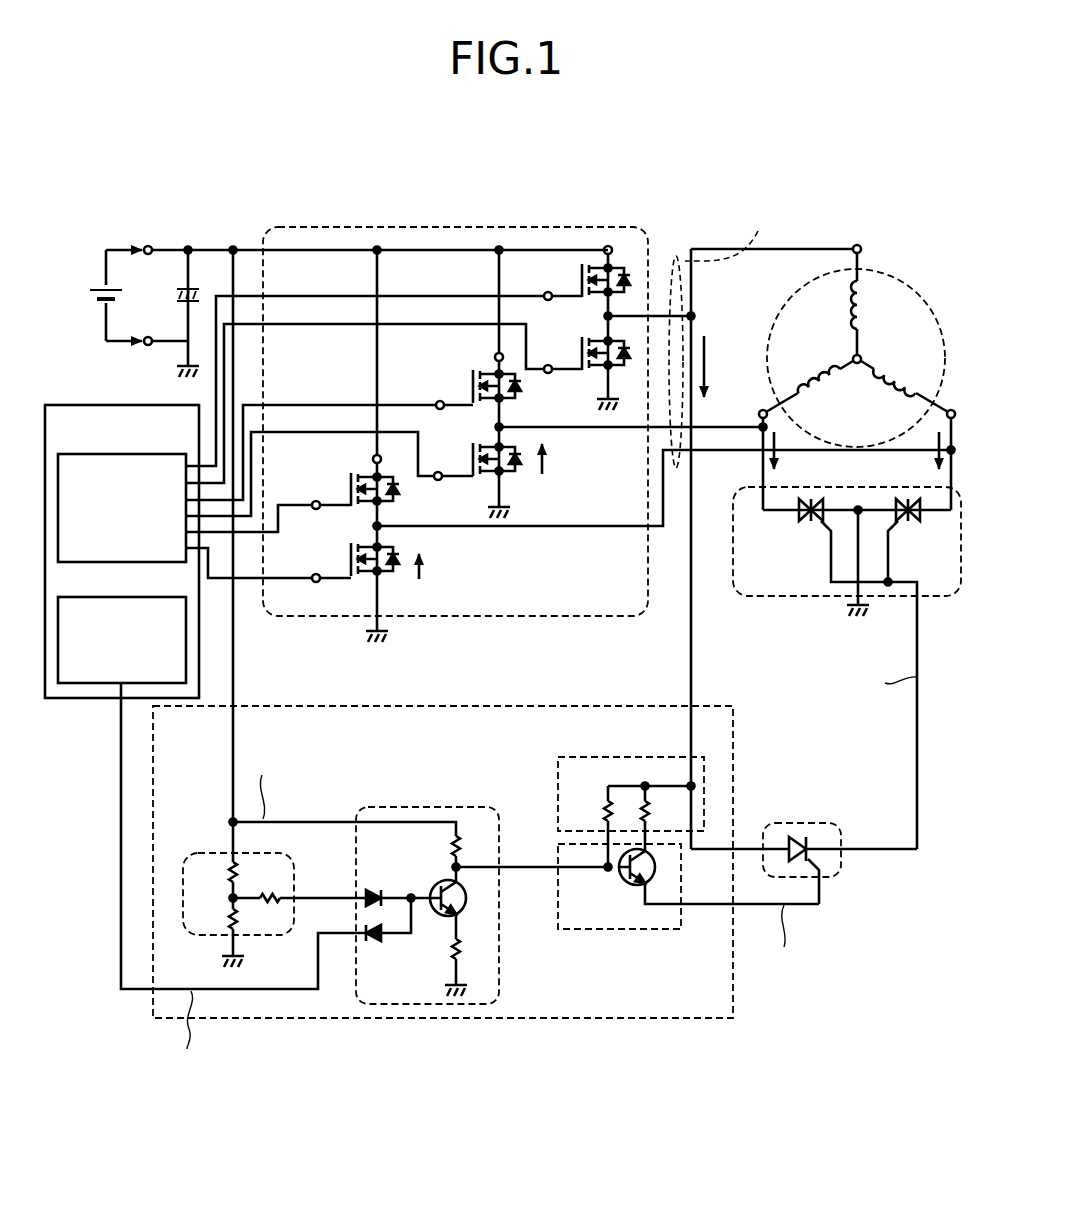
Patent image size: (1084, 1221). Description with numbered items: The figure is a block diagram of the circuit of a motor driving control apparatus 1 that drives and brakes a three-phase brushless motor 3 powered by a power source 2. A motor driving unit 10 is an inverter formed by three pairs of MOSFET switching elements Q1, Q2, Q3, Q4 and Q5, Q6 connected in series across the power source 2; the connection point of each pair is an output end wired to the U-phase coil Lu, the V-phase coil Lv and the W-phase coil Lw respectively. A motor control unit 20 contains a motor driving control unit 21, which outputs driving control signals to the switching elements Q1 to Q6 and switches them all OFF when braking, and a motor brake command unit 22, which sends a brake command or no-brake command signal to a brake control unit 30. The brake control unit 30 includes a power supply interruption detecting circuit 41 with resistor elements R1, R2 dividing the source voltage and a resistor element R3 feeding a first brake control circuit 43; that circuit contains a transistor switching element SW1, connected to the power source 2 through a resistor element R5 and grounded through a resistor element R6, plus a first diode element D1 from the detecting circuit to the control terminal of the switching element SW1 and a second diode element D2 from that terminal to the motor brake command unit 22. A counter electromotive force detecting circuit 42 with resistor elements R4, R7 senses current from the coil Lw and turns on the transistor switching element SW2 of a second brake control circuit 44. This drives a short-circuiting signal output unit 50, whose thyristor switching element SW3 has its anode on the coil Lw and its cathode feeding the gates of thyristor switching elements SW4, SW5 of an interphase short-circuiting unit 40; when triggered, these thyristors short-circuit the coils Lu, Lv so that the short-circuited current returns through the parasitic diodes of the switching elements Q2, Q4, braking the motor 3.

The motor driving control apparatus 1 is at (669, 200).
The power source 2 is at (91, 279).
The motor 3 is at (908, 283).
The motor driving unit 10 is at (582, 228).
The motor control unit 20 is at (100, 406).
The motor driving control unit 21 is at (100, 455).
The motor brake command unit 22 is at (105, 598).
The brake control unit 30 is at (258, 706).
The interphase short-circuiting unit 40 is at (781, 598).
The power supply interruption detecting circuit 41 is at (206, 853).
The counter electromotive force detecting circuit 42 is at (632, 758).
The first brake control circuit 43 is at (460, 808).
The second brake control circuit 44 is at (645, 930).
The short-circuiting signal output unit 50 is at (820, 824).
The switching element Q1 is at (409, 490).
The switching element Q2 is at (399, 579).
The switching element Q3 is at (531, 389).
The switching element Q4 is at (523, 479).
The switching element Q5 is at (623, 261).
The switching element Q6 is at (623, 378).
The resistor element R1 is at (219, 865).
The resistor element R2 is at (222, 937).
The resistor element R3 is at (299, 884).
The resistor element R4 is at (660, 817).
The resistor element R5 is at (472, 858).
The resistor element R6 is at (469, 956).
The resistor element R7 is at (590, 826).
The first diode element D1 is at (397, 884).
The second diode element D2 is at (387, 935).
The switching element SW1 is at (435, 885).
The switching element SW2 is at (704, 882).
The switching element SW3 is at (804, 851).
The switching element SW4 is at (822, 540).
The switching element SW5 is at (916, 540).
The U-phase coil Lu is at (904, 386).
The V-phase coil Lv is at (809, 380).
The W-phase coil Lw is at (876, 304).